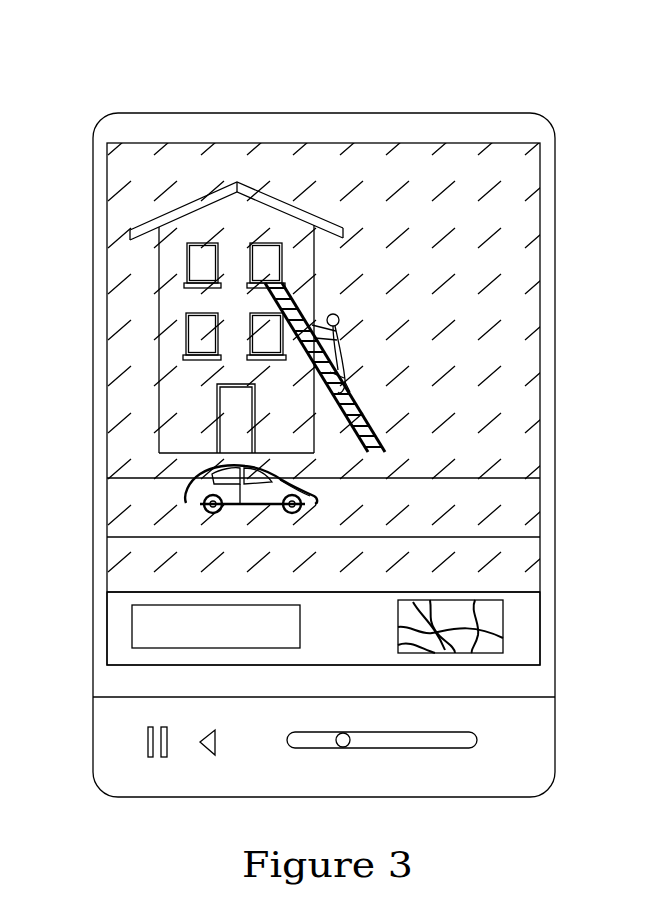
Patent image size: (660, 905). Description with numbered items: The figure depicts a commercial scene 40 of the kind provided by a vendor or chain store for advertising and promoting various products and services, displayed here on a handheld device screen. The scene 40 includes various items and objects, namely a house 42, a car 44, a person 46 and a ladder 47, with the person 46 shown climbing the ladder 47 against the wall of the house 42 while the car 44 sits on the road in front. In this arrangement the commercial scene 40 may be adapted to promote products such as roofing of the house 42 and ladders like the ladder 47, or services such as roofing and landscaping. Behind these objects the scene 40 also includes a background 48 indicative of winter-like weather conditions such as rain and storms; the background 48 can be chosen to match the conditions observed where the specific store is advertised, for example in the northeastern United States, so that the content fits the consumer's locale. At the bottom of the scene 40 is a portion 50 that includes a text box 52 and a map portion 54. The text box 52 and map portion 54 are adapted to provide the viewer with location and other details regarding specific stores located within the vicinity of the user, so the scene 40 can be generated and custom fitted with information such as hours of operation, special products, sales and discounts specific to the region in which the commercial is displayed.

The commercial scene 40 is at (188, 64).
The house 42 is at (314, 263).
The car 44 is at (190, 487).
The person 46 is at (338, 316).
The ladder 47 is at (355, 405).
The background 48 is at (440, 197).
The portion 50 is at (158, 648).
The text box 52 is at (132, 627).
The map portion 54 is at (497, 628).